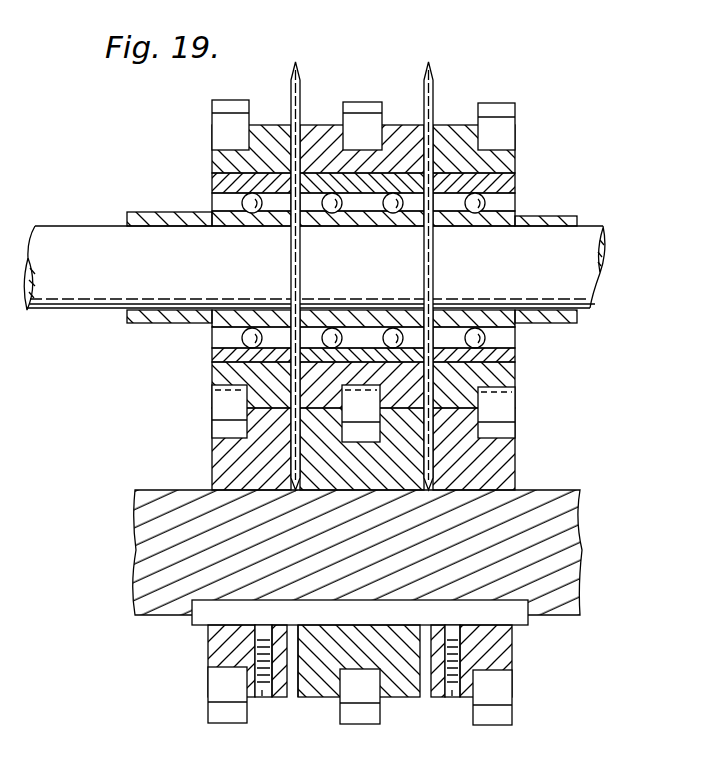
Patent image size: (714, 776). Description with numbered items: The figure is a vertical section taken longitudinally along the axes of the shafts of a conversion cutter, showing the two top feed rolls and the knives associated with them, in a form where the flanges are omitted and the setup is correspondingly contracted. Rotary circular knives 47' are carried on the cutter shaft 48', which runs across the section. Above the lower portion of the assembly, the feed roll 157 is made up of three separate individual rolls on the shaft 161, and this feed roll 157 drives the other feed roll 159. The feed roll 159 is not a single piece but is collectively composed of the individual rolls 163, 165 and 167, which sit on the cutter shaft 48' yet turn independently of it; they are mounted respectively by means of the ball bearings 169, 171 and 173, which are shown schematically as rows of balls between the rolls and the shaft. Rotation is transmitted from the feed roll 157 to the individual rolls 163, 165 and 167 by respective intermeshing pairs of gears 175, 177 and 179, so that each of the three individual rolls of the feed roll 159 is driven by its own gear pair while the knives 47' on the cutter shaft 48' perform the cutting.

The rotary circular knives 47' is at (392, 275).
The cutter shaft 48' is at (339, 247).
The feed roll 157 is at (516, 458).
The feed roll 159 is at (516, 172).
The shaft 161 is at (565, 493).
The individual roll 163 is at (516, 160).
The individual roll 165 is at (388, 125).
The individual roll 167 is at (212, 157).
The ball bearing 169 is at (516, 187).
The ball bearing 171 is at (331, 193).
The ball bearing 173 is at (212, 186).
The intermeshing pair of gears 175 is at (516, 410).
The intermeshing pair of gears 177 is at (343, 423).
The intermeshing pair of gears 179 is at (212, 406).